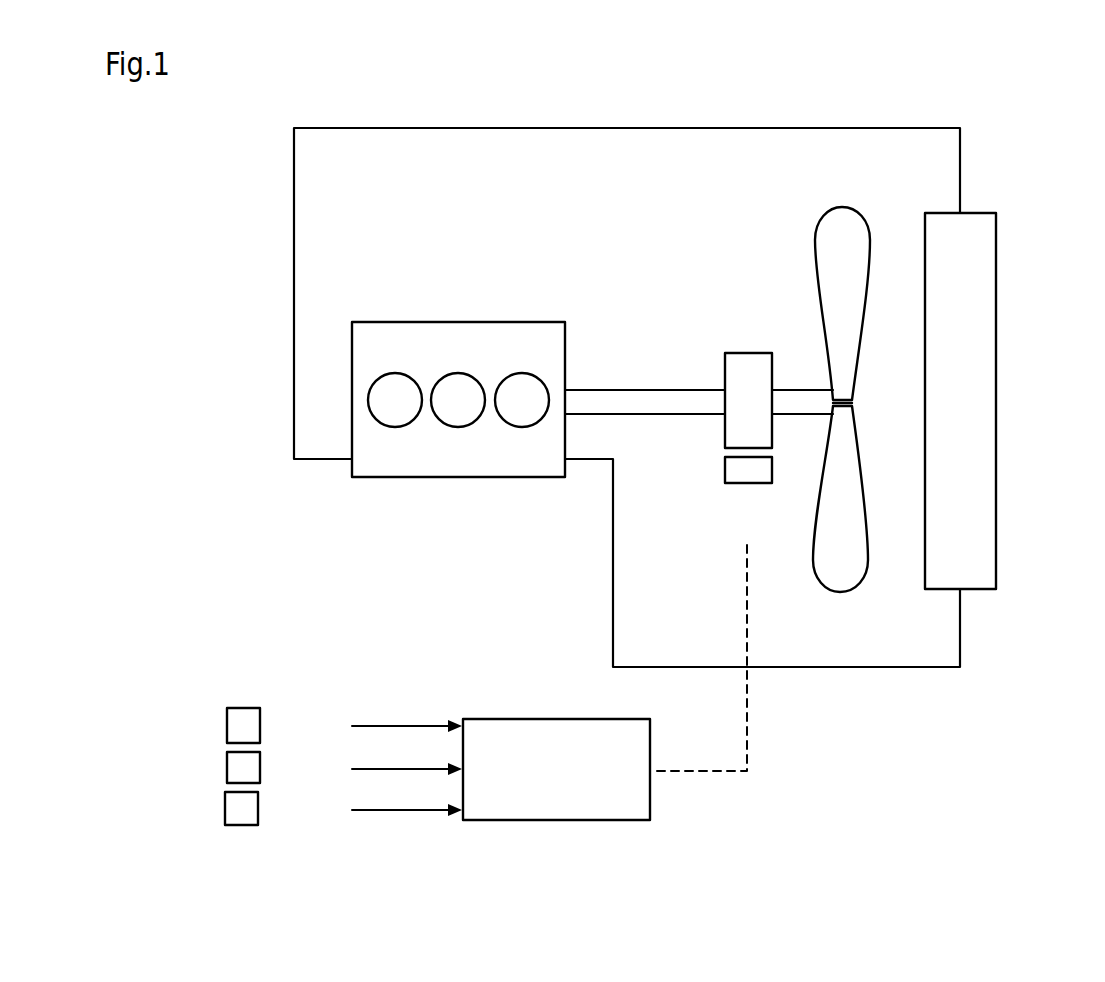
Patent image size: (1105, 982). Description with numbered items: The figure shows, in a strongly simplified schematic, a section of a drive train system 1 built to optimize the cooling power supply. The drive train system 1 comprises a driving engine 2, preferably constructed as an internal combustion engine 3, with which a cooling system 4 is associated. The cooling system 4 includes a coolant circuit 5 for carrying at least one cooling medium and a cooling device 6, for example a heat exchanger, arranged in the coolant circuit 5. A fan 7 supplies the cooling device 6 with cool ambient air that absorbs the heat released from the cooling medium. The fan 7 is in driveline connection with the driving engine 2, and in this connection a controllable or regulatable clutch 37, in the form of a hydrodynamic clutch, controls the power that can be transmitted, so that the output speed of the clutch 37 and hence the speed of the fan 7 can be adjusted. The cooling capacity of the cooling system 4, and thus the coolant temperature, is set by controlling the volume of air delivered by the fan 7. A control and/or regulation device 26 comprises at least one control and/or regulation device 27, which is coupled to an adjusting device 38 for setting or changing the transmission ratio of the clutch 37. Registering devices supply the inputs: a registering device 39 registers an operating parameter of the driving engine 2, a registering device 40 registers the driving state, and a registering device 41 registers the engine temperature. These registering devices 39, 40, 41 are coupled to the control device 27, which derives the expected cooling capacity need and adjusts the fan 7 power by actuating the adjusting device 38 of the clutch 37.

The drive train system 1 is at (665, 112).
The driving engine 2 is at (517, 330).
The internal combustion engine 3 is at (458, 400).
The cooling system 4 is at (907, 117).
The coolant circuit 5 is at (823, 127).
The cooling device 6 is at (985, 264).
The fan 7 is at (826, 238).
The control and/or regulation device 26 is at (536, 698).
The control and/or regulation device 27 is at (560, 806).
The controllable or regulatable clutch 37 is at (745, 360).
The adjusting device 38 is at (747, 492).
The registering device 39 is at (233, 725).
The registering device 40 is at (233, 763).
The registering device 41 is at (233, 811).